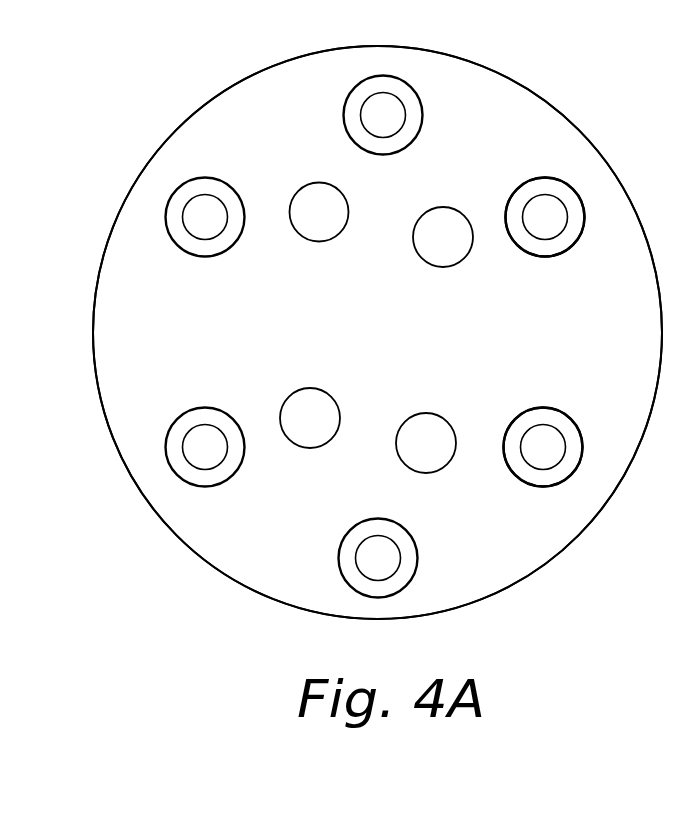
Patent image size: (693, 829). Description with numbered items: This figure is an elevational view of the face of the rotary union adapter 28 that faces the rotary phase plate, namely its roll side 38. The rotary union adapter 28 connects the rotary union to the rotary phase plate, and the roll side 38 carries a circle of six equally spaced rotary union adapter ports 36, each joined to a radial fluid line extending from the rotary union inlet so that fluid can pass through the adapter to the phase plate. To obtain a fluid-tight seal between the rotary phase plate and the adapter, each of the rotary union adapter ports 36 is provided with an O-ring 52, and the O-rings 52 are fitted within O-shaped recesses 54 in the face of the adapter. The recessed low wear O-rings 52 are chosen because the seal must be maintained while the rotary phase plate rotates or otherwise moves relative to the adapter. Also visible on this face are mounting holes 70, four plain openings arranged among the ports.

The rotary union adapter 28 is at (260, 68).
The roll side 38 is at (215, 123).
The rotary union adapter ports 36 is at (387, 112).
The O-ring 52 is at (548, 407).
The O-shaped recess 54 is at (573, 470).
The mounting holes 70 is at (308, 182).